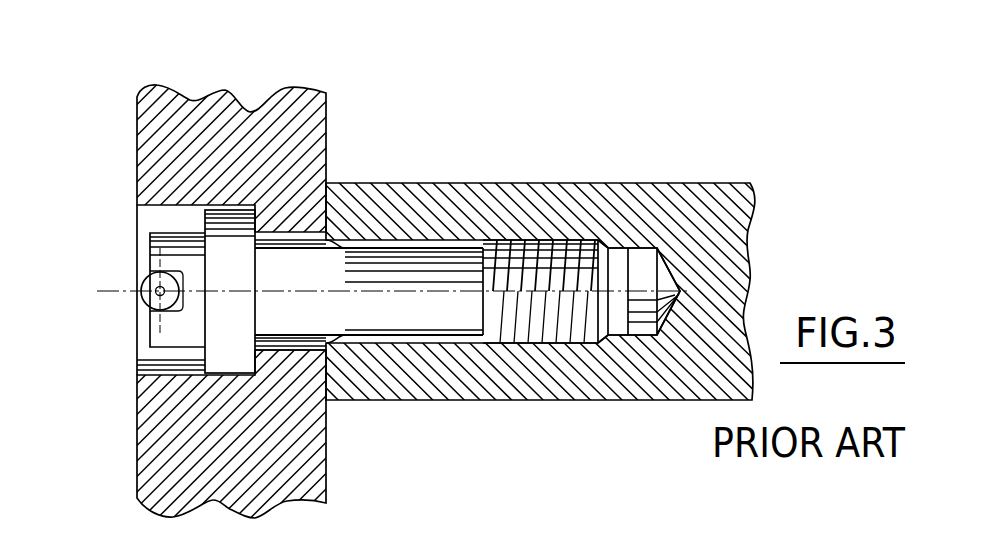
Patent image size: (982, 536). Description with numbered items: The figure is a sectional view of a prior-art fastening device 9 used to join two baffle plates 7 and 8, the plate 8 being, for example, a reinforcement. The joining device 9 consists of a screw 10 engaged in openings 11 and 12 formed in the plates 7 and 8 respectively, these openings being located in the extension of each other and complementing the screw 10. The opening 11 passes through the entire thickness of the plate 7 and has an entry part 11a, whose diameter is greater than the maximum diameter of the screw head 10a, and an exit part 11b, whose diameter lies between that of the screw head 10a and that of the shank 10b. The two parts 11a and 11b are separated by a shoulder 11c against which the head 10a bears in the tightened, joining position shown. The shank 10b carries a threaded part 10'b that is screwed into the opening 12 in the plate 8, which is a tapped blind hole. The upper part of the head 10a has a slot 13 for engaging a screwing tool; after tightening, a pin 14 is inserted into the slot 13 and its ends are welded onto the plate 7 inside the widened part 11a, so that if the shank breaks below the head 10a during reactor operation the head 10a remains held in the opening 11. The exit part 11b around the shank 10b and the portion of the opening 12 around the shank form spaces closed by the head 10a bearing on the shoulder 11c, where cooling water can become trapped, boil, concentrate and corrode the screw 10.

The baffle plate 7 is at (210, 122).
The baffle plate 8 is at (760, 232).
The fastening device 9 is at (118, 140).
The screw 10 is at (391, 222).
The screw head 10a is at (232, 262).
The shank 10b is at (430, 322).
The threaded part 10'b is at (551, 370).
The opening 11 is at (170, 213).
The entry part 11a is at (160, 387).
The exit part 11b is at (253, 355).
The shoulder 11c is at (298, 353).
The opening 12 is at (613, 240).
The slot 13 is at (142, 283).
The pin 14 is at (150, 303).